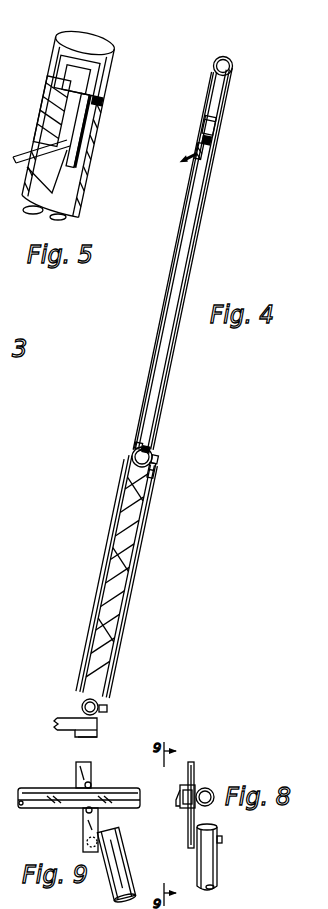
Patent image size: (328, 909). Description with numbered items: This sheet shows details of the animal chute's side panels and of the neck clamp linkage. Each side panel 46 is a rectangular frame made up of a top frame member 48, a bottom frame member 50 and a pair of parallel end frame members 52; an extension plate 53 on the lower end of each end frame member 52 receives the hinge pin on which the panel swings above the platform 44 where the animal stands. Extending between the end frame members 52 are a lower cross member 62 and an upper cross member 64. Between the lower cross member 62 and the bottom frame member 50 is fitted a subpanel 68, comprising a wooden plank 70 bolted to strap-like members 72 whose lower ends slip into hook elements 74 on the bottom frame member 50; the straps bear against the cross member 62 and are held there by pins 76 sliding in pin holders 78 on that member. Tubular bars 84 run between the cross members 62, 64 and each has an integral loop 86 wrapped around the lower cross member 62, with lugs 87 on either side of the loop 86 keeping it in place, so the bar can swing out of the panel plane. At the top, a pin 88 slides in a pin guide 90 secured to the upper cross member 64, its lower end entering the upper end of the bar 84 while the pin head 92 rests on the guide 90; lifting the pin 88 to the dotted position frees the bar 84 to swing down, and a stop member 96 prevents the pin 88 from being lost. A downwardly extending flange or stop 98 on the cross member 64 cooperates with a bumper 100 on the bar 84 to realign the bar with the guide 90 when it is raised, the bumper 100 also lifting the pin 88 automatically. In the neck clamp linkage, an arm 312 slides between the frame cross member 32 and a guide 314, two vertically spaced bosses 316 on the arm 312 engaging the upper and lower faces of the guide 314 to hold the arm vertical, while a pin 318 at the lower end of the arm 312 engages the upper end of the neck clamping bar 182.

In FIG. 4, the top frame member 48 is at (232, 67).
In FIG. 4, the end frame member 52 is at (219, 97).
In FIG. 5, the end frame member 52 is at (77, 43).
In FIG. 4, the stop member 96 is at (211, 123).
In FIG. 5, the stop member 96 is at (62, 70).
In FIG. 4, the pin 88 is at (212, 147).
In FIG. 5, the pin 88 is at (99, 112).
In FIG. 4, the upper cross member 64 is at (201, 157).
In FIG. 5, the upper cross member 64 is at (53, 100).
In FIG. 4, the flange or stop 98 is at (196, 167).
In FIG. 5, the flange or stop 98 is at (33, 150).
In FIG. 4, the tubular bar 84 is at (204, 212).
In FIG. 5, the tubular bar 84 is at (88, 162).
In FIG. 4, the side panel 46 is at (196, 266).
In FIG. 4, the lower cross member 62 is at (158, 455).
In FIG. 4, the lug 87 is at (150, 447).
In FIG. 4, the loop 86 is at (152, 452).
In FIG. 4, the pin holder 78 is at (163, 462).
In FIG. 4, the pin 76 is at (157, 472).
In FIG. 4, the wooden plank 70 is at (135, 500).
In FIG. 4, the strap-like member 72 is at (140, 537).
In FIG. 4, the subpanel 68 is at (136, 567).
In FIG. 4, the bottom frame member 50 is at (112, 663).
In FIG. 4, the hook element 74 is at (106, 706).
In FIG. 4, the platform 44 is at (112, 718).
In FIG. 4, the extension plate 53 is at (97, 733).
In FIG. 5, the pin head 92 is at (95, 97).
In FIG. 5, the pin guide 90 is at (92, 118).
In FIG. 5, the bumper 100 is at (37, 213).
In FIG. 9, the guide 314 is at (62, 788).
In FIG. 8, the guide 314 is at (194, 787).
In FIG. 9, the arm 312 is at (100, 767).
In FIG. 8, the arm 312 is at (193, 763).
In FIG. 9, the boss 316 is at (90, 784).
In FIG. 8, the boss 316 is at (182, 788).
In FIG. 9, the cross member 32 is at (128, 808).
In FIG. 8, the cross member 32 is at (216, 804).
In FIG. 9, the pin 318 is at (86, 842).
In FIG. 8, the pin 318 is at (222, 840).
In FIG. 9, the neck clamping bar 182 is at (118, 867).
In FIG. 8, the neck clamping bar 182 is at (210, 867).